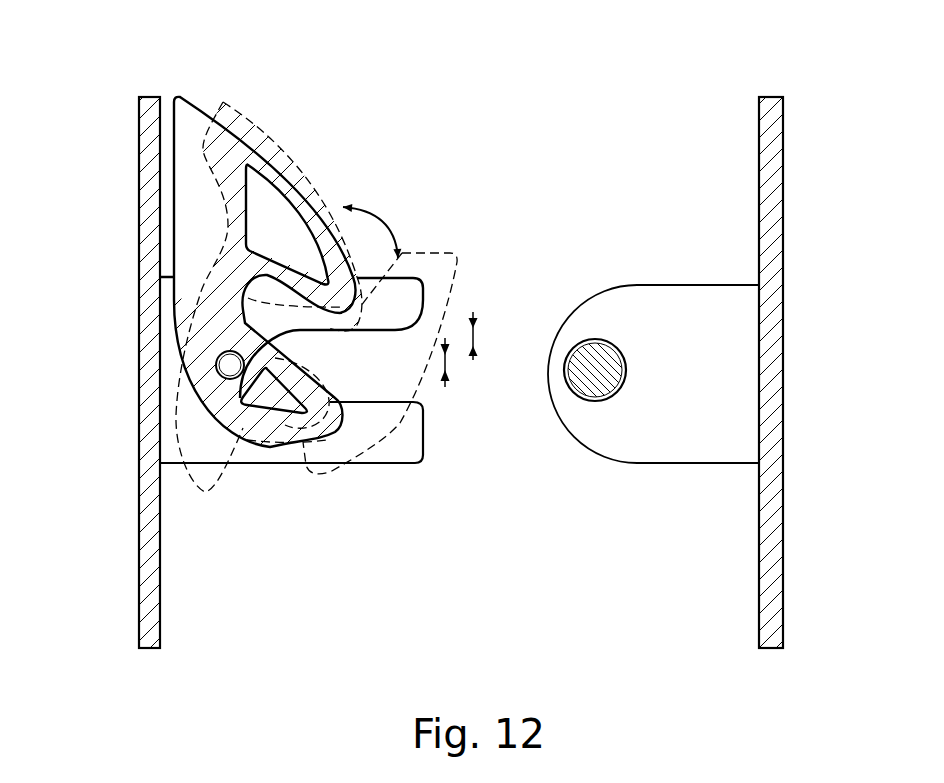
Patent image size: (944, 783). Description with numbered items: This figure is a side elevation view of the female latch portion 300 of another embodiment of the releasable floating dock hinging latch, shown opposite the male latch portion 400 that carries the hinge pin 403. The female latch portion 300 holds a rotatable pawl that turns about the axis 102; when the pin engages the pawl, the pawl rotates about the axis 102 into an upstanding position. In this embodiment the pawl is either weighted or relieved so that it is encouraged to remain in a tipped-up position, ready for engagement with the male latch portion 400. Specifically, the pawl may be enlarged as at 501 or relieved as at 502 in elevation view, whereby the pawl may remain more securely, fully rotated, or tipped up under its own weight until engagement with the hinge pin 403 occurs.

The female latch portion 300 is at (138, 197).
The latch portion 400 is at (787, 197).
The hinge pin 403 is at (598, 363).
The enlarged pawl region 501 is at (203, 100).
The relieved pawl region 502 is at (282, 146).
The axis 102 is at (230, 378).